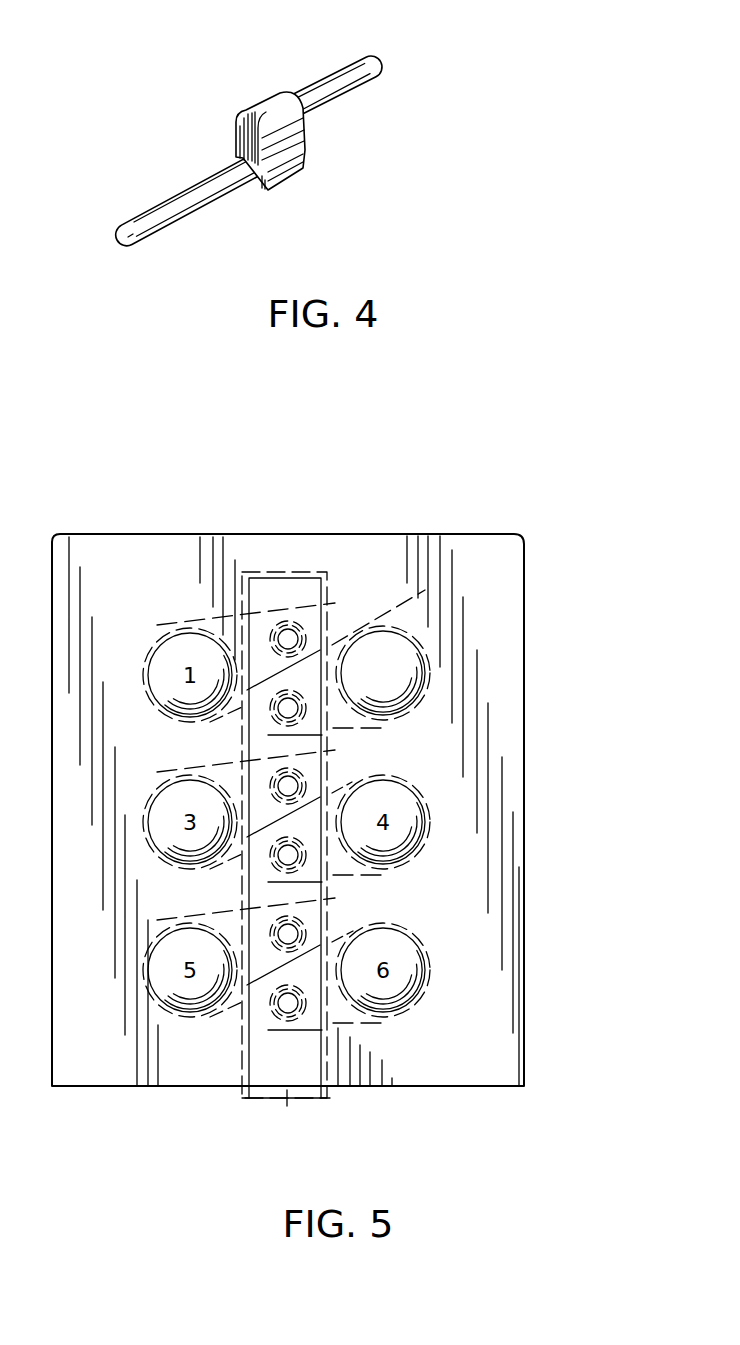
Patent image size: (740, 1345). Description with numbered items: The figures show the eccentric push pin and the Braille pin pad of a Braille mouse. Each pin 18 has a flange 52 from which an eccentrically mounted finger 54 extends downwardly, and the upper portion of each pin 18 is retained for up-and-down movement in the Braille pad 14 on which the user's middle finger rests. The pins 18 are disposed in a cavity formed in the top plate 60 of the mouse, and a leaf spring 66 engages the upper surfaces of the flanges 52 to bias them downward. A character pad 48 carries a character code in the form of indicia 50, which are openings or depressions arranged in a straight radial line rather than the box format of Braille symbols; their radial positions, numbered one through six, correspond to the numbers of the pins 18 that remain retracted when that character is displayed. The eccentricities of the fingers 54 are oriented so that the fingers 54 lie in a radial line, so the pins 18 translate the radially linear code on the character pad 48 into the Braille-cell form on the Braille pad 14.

In FIG. 5, the Braille pad 14 is at (442, 527).
In FIG. 4, the Braille pin 18 is at (173, 190).
In FIG. 5, the Braille pin 18 is at (398, 667).
In FIG. 5, the character pad 48 is at (268, 572).
In FIG. 5, the indicia 50 is at (270, 1012).
In FIG. 4, the flange 52 is at (273, 128).
In FIG. 5, the flange 52 is at (433, 585).
In FIG. 4, the finger 54 is at (322, 86).
In FIG. 5, the finger 54 is at (288, 1005).
In FIG. 5, the top plate 60 is at (263, 1093).
In FIG. 5, the leaf spring 66 is at (333, 600).